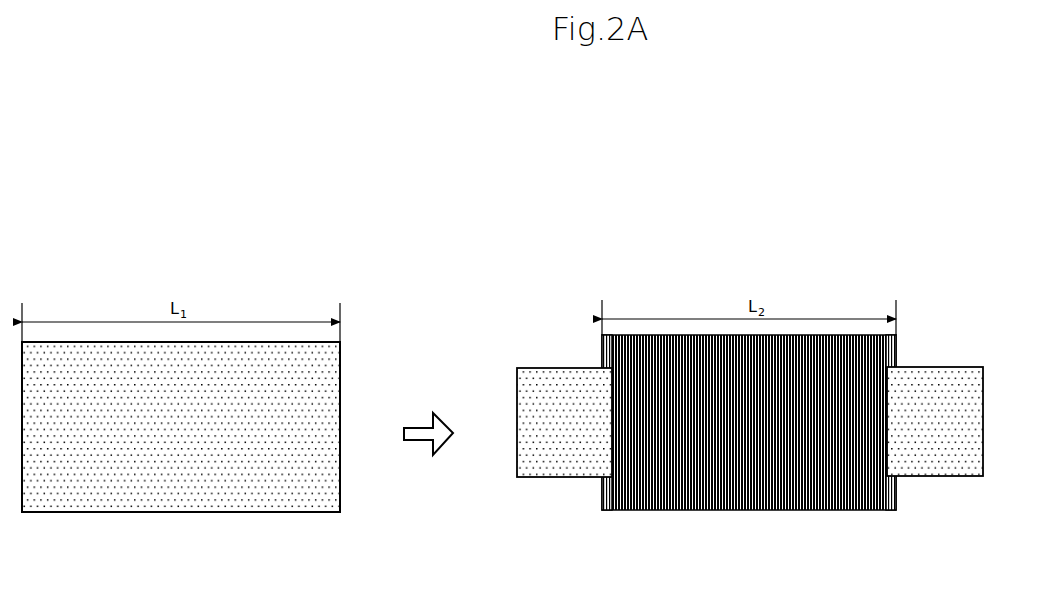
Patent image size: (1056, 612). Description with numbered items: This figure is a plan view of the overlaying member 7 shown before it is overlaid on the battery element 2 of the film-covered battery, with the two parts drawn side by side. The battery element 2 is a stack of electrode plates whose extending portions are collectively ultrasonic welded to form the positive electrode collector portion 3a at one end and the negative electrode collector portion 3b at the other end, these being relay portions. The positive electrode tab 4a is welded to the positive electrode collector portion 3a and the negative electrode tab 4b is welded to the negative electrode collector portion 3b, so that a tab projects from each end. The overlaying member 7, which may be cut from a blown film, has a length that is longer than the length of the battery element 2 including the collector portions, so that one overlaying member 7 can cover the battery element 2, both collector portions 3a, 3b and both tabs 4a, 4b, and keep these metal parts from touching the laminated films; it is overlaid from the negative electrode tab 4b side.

The overlaying member 7 is at (227, 497).
The battery element 2 is at (812, 510).
The positive electrode collector portion 3a is at (895, 345).
The negative electrode collector portion 3b is at (617, 510).
The positive electrode tab 4a is at (983, 408).
The negative electrode tab 4b is at (517, 450).